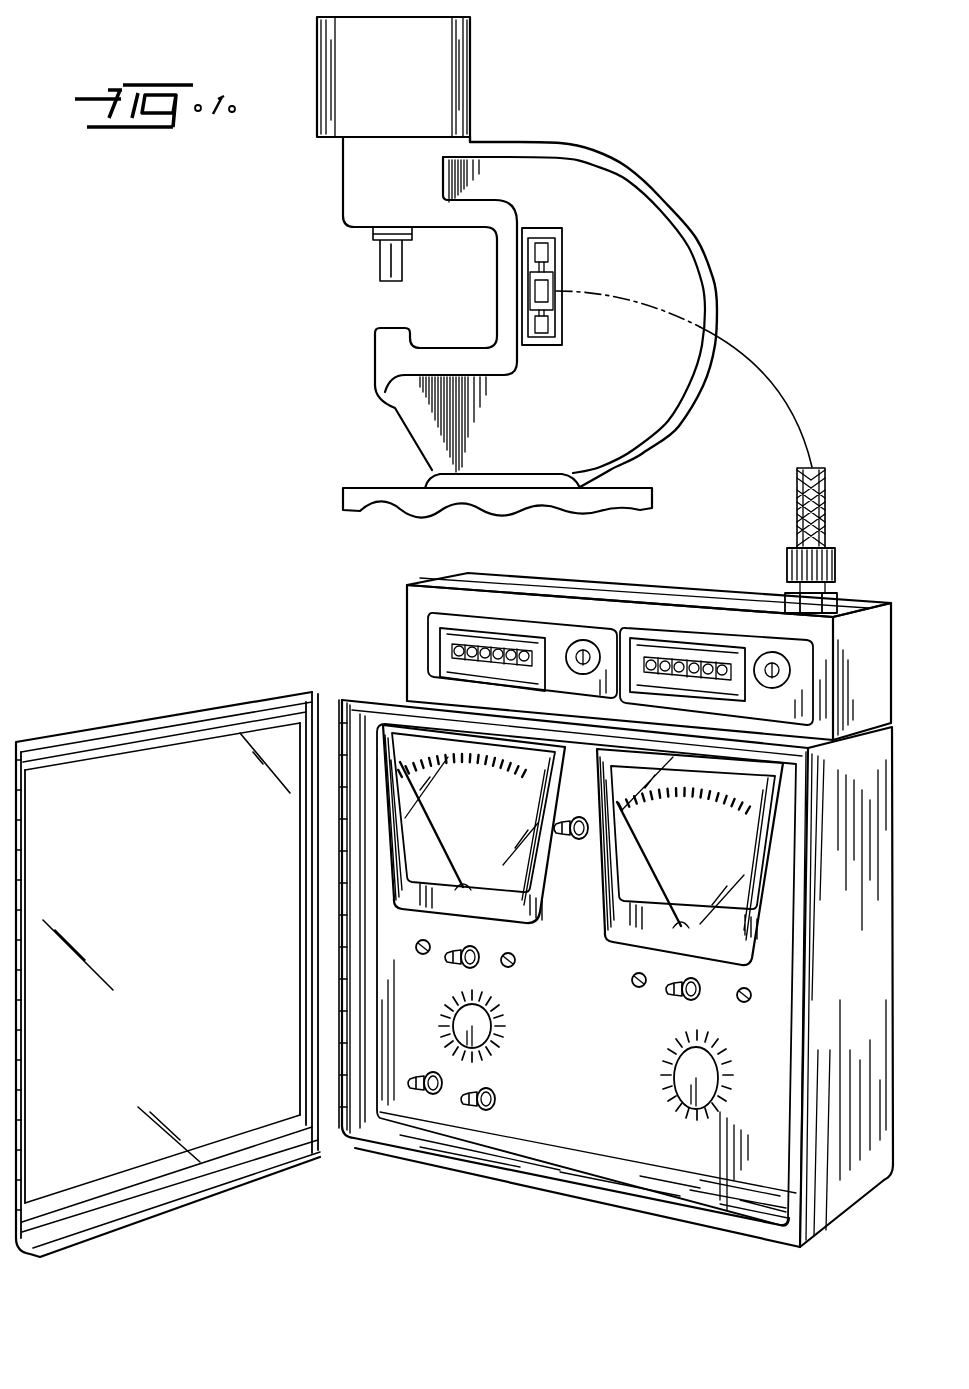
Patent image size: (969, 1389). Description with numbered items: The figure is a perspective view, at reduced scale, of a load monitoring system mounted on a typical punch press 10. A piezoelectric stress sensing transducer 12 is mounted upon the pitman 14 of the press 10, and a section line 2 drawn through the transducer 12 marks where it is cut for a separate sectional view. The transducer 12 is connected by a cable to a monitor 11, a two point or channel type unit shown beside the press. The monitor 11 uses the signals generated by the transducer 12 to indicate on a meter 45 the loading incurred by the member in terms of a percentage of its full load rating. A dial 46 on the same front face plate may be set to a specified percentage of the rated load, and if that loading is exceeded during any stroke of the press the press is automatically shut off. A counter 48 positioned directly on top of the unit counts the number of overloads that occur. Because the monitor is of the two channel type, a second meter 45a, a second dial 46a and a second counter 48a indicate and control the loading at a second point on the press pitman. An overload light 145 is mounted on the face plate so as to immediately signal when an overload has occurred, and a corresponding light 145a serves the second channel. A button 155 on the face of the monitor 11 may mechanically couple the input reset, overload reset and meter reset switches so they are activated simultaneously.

The punch press 10 is at (322, 186).
The pitman 14 is at (497, 285).
The piezoelectric stress sensing transducer 12 is at (556, 291).
The section line 2- 2 is at (516, 365).
The monitor 11 is at (388, 695).
The counter 48 is at (702, 648).
The counter 48a is at (452, 633).
The meter 45 is at (622, 912).
The second meter 45a is at (405, 740).
The overload light 145 is at (670, 997).
The toggle switch 145a is at (456, 962).
The dial 46 is at (683, 1093).
The dial 46a is at (460, 1030).
The button 155 is at (425, 1095).